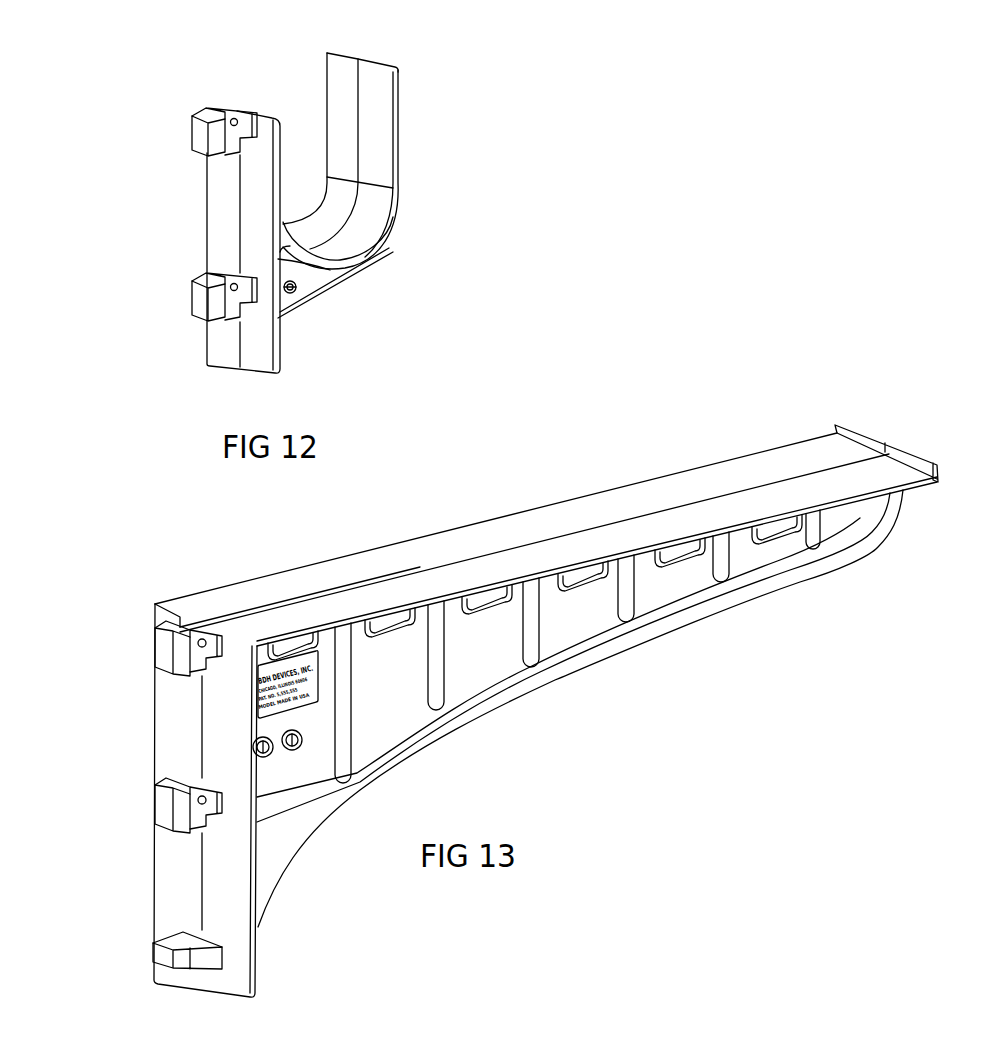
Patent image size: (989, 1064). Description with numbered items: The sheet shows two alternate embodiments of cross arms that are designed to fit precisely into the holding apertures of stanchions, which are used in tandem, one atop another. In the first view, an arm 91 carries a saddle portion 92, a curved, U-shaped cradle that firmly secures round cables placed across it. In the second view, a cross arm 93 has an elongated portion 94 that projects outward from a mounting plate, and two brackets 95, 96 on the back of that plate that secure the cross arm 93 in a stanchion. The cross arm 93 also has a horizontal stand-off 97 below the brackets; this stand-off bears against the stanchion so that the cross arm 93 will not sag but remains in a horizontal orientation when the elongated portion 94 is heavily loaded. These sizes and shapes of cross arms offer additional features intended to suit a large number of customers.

In FIG. 12, the arm 91 is at (330, 292).
In FIG. 12, the saddle portion 92 is at (362, 201).
In FIG. 13, the cross arm 93 is at (400, 747).
In FIG. 13, the elongated portion 94 is at (704, 472).
In FIG. 13, the bracket 95 is at (173, 668).
In FIG. 13, the bracket 96 is at (172, 818).
In FIG. 13, the horizontal stand-off 97 is at (173, 968).